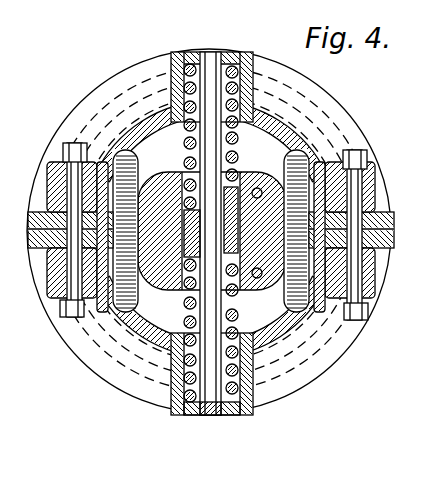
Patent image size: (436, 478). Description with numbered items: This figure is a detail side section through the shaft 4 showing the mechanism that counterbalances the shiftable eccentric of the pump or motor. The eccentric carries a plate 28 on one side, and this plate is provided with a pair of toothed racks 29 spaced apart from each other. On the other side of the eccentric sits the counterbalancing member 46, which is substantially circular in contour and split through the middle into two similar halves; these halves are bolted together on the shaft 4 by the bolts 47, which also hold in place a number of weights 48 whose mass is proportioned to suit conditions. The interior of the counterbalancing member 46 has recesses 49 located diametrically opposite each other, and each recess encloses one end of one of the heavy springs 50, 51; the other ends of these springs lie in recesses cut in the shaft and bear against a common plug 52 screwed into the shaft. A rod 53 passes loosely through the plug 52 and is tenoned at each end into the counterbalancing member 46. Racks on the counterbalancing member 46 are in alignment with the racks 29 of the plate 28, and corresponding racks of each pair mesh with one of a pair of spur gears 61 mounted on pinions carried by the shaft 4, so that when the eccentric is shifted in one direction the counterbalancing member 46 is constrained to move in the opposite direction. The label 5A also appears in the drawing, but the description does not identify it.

The shaft 4 is at (158, 273).
The central rod 5A is at (236, 173).
The plate 28 is at (333, 122).
The toothed racks 29 is at (110, 157).
The counterbalancing member 46 is at (128, 77).
The bolts 47 is at (68, 318).
The weights 48 is at (48, 173).
The recesses 49 is at (255, 62).
The spring 50 is at (191, 64).
The spring 51 is at (175, 411).
The plug 52 is at (226, 265).
The rod 53 is at (218, 416).
The spur gears 61 is at (122, 227).